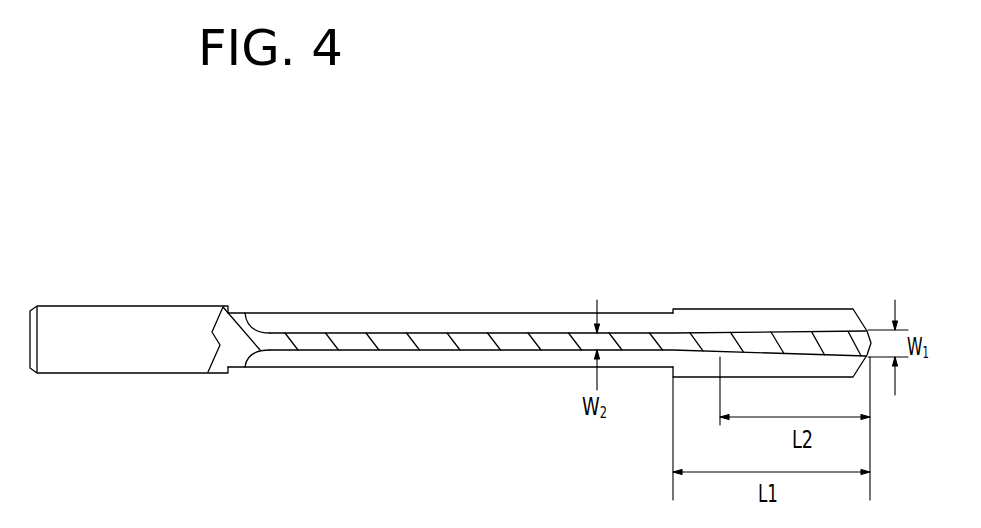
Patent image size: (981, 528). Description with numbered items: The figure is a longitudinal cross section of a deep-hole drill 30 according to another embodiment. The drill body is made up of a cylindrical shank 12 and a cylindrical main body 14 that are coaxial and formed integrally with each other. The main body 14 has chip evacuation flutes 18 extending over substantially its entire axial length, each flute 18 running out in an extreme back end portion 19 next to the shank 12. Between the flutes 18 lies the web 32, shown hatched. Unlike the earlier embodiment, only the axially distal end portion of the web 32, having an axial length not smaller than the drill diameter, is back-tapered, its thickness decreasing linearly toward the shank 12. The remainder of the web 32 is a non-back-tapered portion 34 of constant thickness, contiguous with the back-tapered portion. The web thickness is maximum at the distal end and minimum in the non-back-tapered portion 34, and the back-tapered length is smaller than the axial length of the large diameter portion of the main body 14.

The deep-hole drill 30 is at (198, 257).
The cylindrical shank 12 is at (120, 348).
The cylindrical main body 14 is at (783, 283).
The chip evacuation flute 18 is at (428, 333).
The extreme back end portion 19 is at (265, 324).
The web 32 is at (403, 343).
The non-back-tapered portion 34 is at (525, 333).